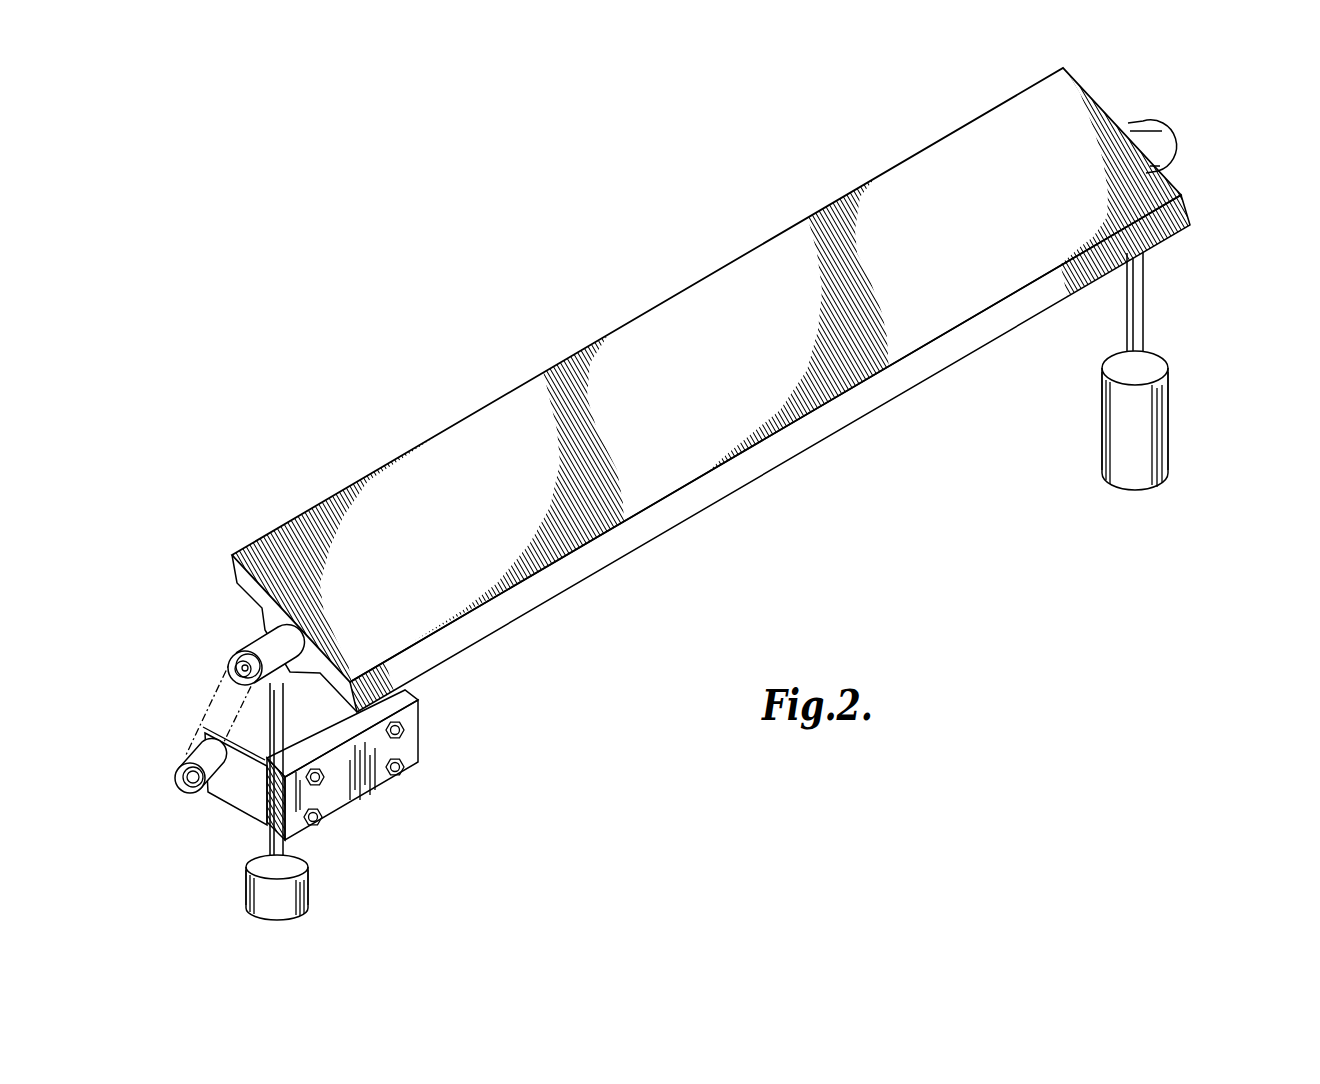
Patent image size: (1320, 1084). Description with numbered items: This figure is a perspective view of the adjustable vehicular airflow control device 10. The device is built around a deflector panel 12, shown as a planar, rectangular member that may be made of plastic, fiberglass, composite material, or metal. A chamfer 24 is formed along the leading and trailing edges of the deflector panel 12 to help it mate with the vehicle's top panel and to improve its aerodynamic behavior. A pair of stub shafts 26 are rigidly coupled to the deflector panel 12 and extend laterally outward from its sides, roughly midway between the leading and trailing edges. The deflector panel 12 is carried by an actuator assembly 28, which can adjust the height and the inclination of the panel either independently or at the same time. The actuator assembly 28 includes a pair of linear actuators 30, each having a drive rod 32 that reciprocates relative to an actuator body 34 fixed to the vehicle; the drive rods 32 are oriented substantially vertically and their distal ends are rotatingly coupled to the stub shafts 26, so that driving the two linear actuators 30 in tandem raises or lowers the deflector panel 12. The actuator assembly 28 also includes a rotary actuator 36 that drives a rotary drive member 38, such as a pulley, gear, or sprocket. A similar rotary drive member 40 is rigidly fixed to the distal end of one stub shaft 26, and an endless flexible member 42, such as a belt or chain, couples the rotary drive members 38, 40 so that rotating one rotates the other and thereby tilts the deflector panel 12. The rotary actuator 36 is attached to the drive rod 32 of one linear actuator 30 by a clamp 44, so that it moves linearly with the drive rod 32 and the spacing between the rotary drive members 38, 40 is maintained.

The adjustable vehicular airflow control device 10 is at (450, 305).
The deflector panel 12 is at (685, 313).
The chamfer 24 is at (802, 435).
The stub shafts 26 is at (241, 672).
The actuator assembly 28 is at (403, 816).
The linear actuators 30 is at (319, 888).
The drive rod 32 is at (270, 845).
The actuator body 34 is at (305, 855).
The rotary actuator 36 is at (429, 735).
The rotary drive member 38 is at (190, 797).
The rotary drive member 40 is at (233, 652).
The endless flexible member 42 is at (205, 708).
The clamp 44 is at (265, 803).